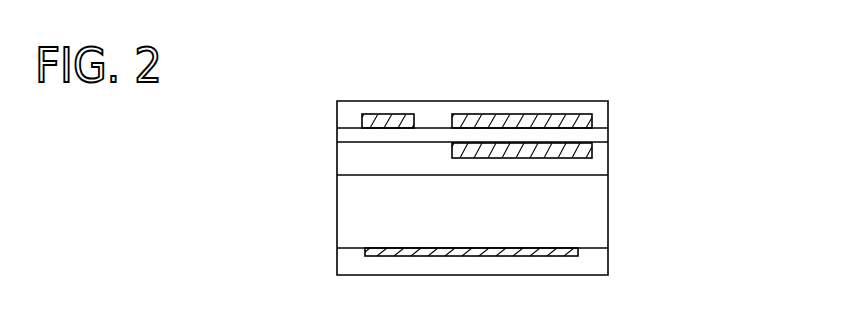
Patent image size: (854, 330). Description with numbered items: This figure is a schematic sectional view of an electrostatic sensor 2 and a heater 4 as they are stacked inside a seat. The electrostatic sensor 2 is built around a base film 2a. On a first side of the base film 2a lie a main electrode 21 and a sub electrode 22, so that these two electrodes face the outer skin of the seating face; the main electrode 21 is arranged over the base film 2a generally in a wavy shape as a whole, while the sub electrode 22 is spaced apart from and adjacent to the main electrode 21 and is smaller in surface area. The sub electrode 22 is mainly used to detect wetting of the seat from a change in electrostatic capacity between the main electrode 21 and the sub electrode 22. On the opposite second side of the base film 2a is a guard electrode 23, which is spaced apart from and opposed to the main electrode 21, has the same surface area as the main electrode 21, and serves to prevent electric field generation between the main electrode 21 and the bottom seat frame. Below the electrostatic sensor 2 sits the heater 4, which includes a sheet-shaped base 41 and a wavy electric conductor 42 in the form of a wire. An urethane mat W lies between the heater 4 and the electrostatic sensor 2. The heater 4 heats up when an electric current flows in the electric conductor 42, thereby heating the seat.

The electrostatic sensor 2 is at (335, 157).
The base film 2a is at (345, 134).
The main electrode 21 is at (493, 115).
The sub electrode 22 is at (387, 115).
The guard electrode 23 is at (592, 150).
The urethane mat W is at (353, 210).
The heater 4 is at (484, 272).
The base 41 is at (598, 273).
The electric conductor 42 is at (580, 254).